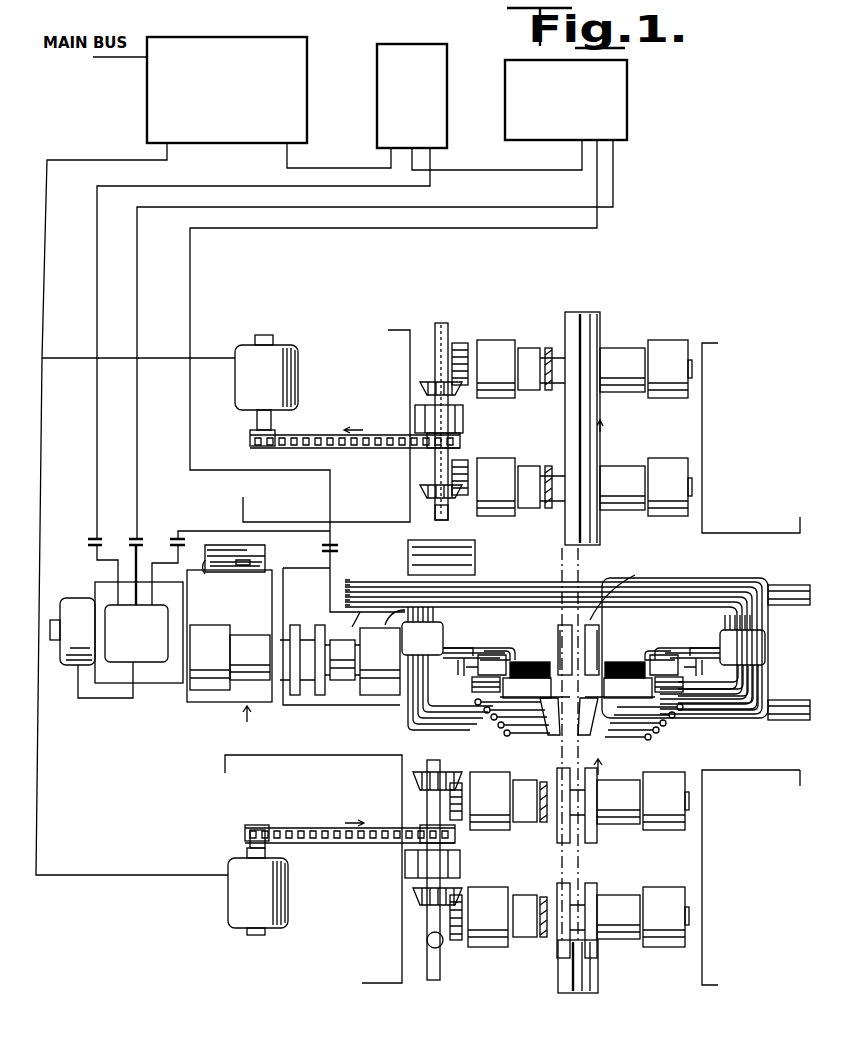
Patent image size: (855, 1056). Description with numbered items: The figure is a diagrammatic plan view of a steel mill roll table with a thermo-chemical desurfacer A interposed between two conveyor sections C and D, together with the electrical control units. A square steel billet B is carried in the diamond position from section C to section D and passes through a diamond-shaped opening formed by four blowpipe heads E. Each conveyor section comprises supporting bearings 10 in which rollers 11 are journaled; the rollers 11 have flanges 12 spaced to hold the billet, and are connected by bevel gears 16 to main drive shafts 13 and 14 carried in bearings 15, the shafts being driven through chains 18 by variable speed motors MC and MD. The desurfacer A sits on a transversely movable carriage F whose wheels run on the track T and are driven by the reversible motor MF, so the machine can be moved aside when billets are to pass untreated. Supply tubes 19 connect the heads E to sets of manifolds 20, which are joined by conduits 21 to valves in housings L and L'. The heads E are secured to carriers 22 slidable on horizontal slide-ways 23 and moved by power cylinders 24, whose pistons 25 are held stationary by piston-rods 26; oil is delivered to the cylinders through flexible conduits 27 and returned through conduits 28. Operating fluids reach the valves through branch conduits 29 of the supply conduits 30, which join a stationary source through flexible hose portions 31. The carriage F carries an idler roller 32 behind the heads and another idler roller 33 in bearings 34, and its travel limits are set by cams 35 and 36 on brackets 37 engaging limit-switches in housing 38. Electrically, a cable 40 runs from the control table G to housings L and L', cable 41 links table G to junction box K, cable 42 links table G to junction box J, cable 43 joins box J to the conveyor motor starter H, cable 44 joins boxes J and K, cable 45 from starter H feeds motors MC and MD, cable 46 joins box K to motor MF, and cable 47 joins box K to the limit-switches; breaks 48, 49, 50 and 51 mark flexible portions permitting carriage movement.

The supporting bearings 10 is at (483, 398).
The rollers 11 is at (628, 364).
The flanges 12 is at (565, 448).
The drive shaft 13 is at (433, 978).
The drive shaft 14 is at (437, 330).
The bearings 15 is at (425, 412).
The bevel gears 16 is at (458, 345).
The chains 18 is at (360, 448).
The supply tubes 19 is at (510, 738).
The manifolds 20 is at (507, 732).
The conduits 21 is at (430, 740).
The carriers 22 is at (553, 728).
The horizontal slide-ways 23 is at (472, 692).
The power cylinders 24 is at (545, 662).
The pistons 25 is at (515, 662).
The piston-rods 26 is at (480, 660).
The flexible conduits 27 is at (581, 670).
The flexible conduits 28 is at (454, 660).
The branch conduits 29 is at (778, 635).
The supply conduits 30 is at (520, 595).
The flexible hose portions 31 is at (356, 584).
The idler roller 32 is at (623, 588).
The idler roller 33 is at (342, 690).
The bearings 34 is at (385, 690).
The cams 35 is at (230, 548).
The cams 36 is at (245, 560).
The brackets 37 is at (205, 565).
The limit-switch housing 38 is at (408, 548).
The cable 40 is at (473, 228).
The cable 41 is at (378, 207).
The cable 42 is at (521, 173).
The cable 43 is at (344, 170).
The cable 44 is at (97, 305).
The cable 45 is at (45, 240).
The cable 46 is at (103, 700).
The cable 47 is at (205, 528).
The break 48 is at (344, 547).
The break 49 is at (165, 532).
The break 50 is at (123, 562).
The break 51 is at (89, 536).
The conveyor motor starter H is at (297, 85).
The junction box J is at (438, 95).
The control table G is at (620, 100).
The junction box K is at (136, 633).
The valve housing L is at (422, 631).
The valve housing L' is at (742, 640).
The variable speed motor MD is at (235, 387).
The variable speed motor MC is at (238, 903).
The reversible motor MF is at (76, 608).
The desurfacer A is at (770, 672).
The billet B is at (600, 315).
The conveyor section C is at (719, 886).
The conveyor section D is at (713, 403).
The blowpipe heads E is at (604, 769).
The carriage F is at (252, 720).
The transverse track T is at (792, 570).